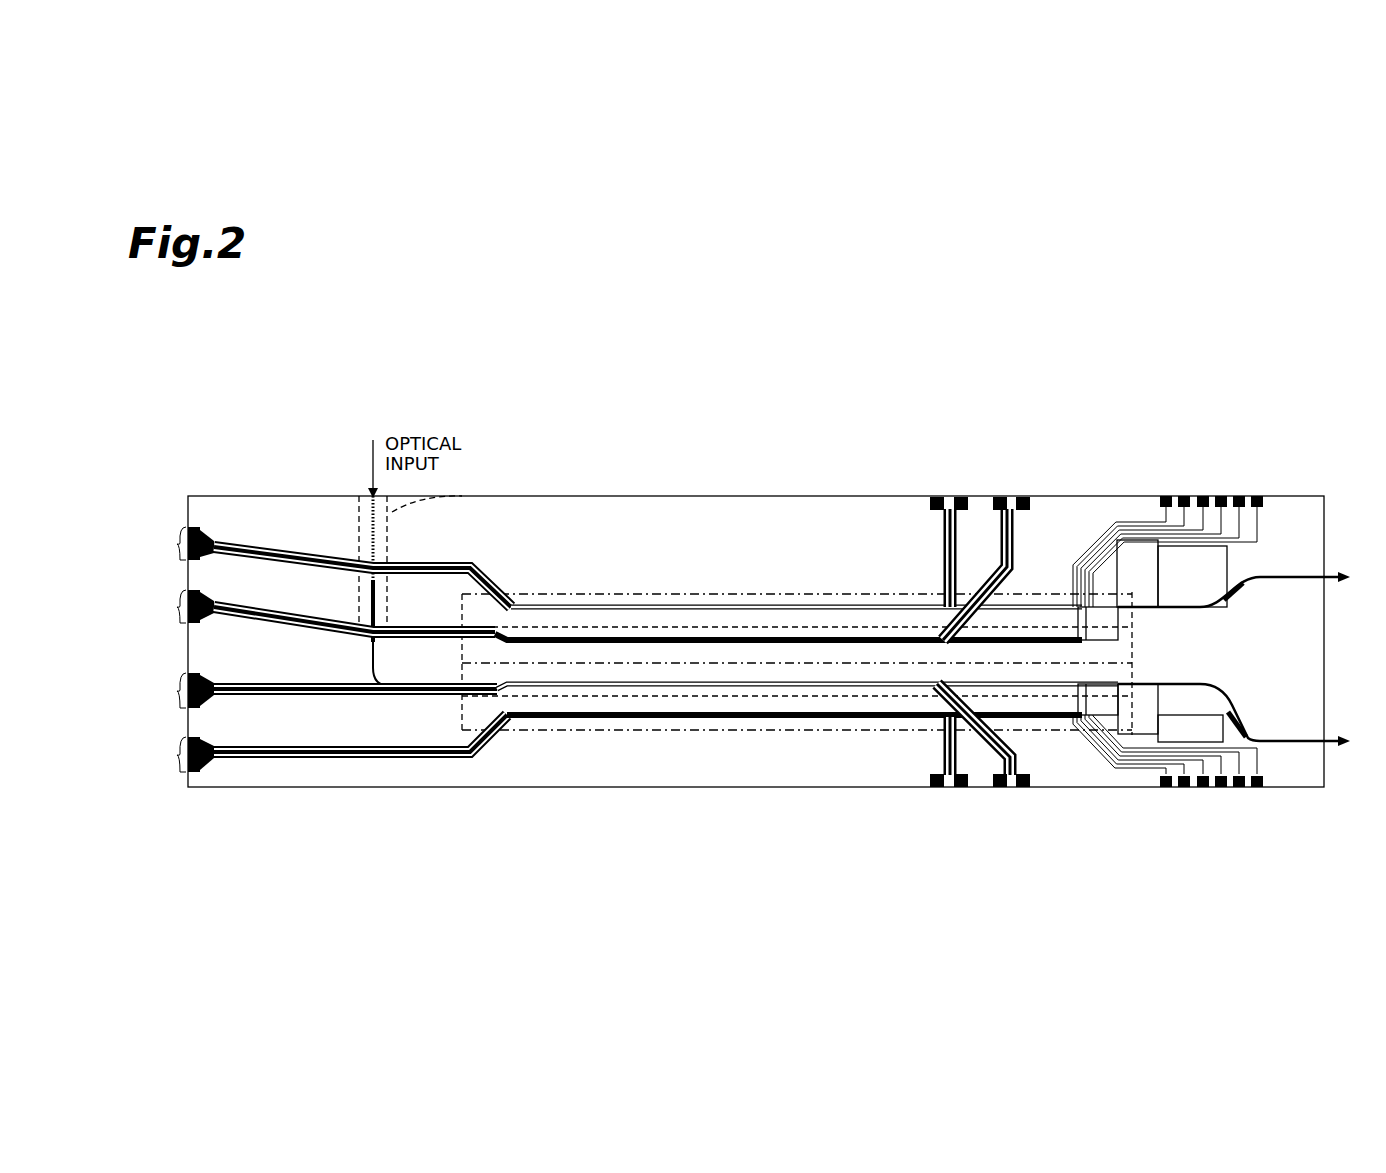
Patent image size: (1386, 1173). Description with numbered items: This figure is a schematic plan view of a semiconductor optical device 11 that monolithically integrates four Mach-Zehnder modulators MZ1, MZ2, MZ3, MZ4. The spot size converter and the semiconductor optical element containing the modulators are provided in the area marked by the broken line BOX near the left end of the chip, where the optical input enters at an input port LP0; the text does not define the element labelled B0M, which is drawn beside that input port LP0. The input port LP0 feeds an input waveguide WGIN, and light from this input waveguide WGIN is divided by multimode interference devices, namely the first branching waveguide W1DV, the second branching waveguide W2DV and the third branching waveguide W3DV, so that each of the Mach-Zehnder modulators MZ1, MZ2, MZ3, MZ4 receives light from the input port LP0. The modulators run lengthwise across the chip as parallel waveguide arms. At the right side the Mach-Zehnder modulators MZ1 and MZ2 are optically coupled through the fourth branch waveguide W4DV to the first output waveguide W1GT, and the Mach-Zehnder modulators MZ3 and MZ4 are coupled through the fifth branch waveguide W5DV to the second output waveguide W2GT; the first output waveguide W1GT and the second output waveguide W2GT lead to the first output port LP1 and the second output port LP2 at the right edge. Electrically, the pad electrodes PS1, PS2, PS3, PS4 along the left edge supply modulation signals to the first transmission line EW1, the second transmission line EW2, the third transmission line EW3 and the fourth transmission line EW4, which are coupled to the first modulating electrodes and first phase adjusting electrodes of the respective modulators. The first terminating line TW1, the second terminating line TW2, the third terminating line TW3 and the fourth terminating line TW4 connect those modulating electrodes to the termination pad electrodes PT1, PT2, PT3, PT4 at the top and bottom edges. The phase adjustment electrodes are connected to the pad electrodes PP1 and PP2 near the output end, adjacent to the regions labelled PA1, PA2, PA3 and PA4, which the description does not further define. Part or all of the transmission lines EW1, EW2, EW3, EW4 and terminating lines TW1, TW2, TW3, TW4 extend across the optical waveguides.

The optical modulator 11 is at (1206, 334).
The input port LP0 is at (370, 494).
The input beam B0M is at (372, 494).
The broken line BOX is at (390, 515).
The input waveguide WGIN is at (376, 532).
The first branching waveguide W1DV is at (368, 600).
The second branching waveguide W2DV is at (432, 607).
The third branching waveguide W3DV is at (440, 697).
The fourth branch waveguide W4DV is at (1246, 592).
The fifth branch waveguide W5DV is at (1265, 710).
The pad electrode PS1 is at (165, 545).
The pad electrode PS2 is at (165, 607).
The pad electrode PS3 is at (165, 690).
The pad electrode PS4 is at (165, 754).
The first transmission line EW1 is at (345, 563).
The second transmission line EW2 is at (343, 638).
The third transmission line EW3 is at (343, 697).
The fourth transmission line EW4 is at (343, 760).
The Mach-Zehnder modulator MZ1 is at (530, 632).
The Mach-Zehnder modulator MZ2 is at (582, 668).
The Mach-Zehnder modulator MZ3 is at (632, 657).
The Mach-Zehnder modulator MZ4 is at (673, 690).
The first terminating line TW1 is at (943, 553).
The second terminating line TW2 is at (1007, 552).
The third terminating line TW3 is at (1012, 750).
The fourth terminating line TW4 is at (943, 752).
The pad electrode PT1 is at (968, 490).
The pad electrode PT2 is at (1030, 490).
The pad electrode PT3 is at (1030, 794).
The pad electrode PT4 is at (968, 794).
The first phase adjuster PA1 is at (1097, 537).
The second phase adjuster PA2 is at (1108, 725).
The third phase adjuster PA3 is at (1107, 572).
The fourth phase adjuster PA4 is at (1170, 715).
The pad electrode PP1 is at (1263, 490).
The pad electrode PP2 is at (1263, 794).
The first output waveguide W1GT is at (1282, 566).
The second output waveguide W2GT is at (1282, 744).
The first output port LP1 is at (1328, 574).
The second output port LP2 is at (1328, 750).